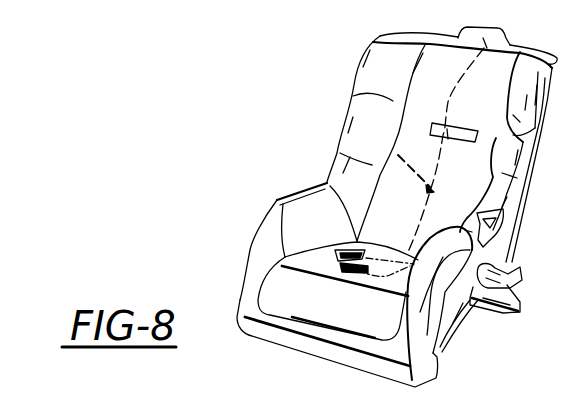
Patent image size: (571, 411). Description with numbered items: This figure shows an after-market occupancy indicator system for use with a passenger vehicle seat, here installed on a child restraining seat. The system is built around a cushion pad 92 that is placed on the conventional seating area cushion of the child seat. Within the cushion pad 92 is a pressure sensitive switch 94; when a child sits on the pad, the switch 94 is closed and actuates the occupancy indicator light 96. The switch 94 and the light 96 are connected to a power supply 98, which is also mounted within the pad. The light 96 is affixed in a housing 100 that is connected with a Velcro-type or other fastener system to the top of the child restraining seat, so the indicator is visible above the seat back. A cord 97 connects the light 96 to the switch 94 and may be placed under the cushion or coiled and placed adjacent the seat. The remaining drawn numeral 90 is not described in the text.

The housing 100 is at (446, 19).
The occupancy indicator light 96 is at (505, 43).
The power supply 98 is at (464, 134).
The cord 97 is at (390, 150).
The pressure sensitive switch 94 is at (373, 268).
The cushion pad 92 is at (285, 257).
The seat base 90 is at (404, 322).